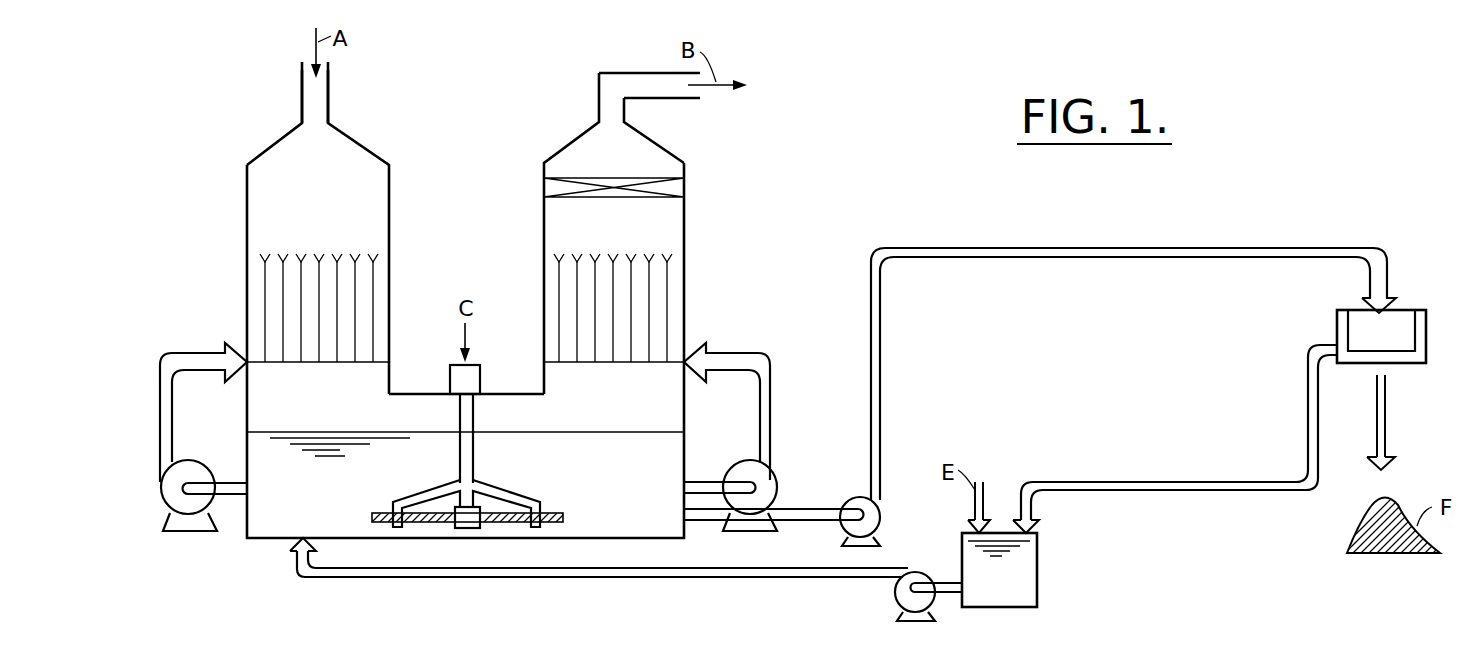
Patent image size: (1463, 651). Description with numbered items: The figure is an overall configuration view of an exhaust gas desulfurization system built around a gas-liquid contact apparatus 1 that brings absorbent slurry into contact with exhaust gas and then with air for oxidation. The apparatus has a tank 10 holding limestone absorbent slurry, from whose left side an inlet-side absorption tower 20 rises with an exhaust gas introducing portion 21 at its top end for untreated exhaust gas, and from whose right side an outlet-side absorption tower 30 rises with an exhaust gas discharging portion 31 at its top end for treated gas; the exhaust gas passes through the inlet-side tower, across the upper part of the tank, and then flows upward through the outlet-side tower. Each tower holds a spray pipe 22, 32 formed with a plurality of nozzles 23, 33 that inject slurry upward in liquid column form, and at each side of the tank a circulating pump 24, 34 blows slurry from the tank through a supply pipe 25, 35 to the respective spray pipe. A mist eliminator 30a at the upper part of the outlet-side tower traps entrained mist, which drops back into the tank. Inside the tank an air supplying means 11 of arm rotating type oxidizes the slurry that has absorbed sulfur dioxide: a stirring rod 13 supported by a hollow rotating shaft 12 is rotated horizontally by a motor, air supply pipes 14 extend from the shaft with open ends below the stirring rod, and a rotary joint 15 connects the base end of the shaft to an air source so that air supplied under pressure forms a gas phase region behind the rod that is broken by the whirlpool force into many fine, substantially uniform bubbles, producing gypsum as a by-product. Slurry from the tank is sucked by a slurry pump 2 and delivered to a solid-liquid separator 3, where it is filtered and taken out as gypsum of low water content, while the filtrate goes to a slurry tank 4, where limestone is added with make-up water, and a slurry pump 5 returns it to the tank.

The gas-liquid contact apparatus 1 is at (780, 112).
The slurry pump 2 is at (882, 521).
The solid-liquid separator 3 is at (1420, 310).
The slurry tank 4 is at (1038, 566).
The slurry pump 5 is at (895, 600).
The tank 10 is at (355, 540).
The air supplying means 11 is at (562, 485).
The hollow rotating shaft 12 is at (474, 452).
The stirring rod 13 is at (433, 530).
The air supply pipe 14 is at (413, 496).
The rotary joint 15 is at (482, 376).
The inlet-side absorption tower 20 is at (241, 232).
The exhaust gas introducing portion 21 is at (302, 90).
The spray pipe 22 is at (259, 361).
The nozzles 23 is at (283, 363).
The circulating pump 24 is at (165, 500).
The supply pipe 25 is at (192, 352).
The outlet-side absorption tower 30 is at (697, 247).
The mist eliminator 30a is at (632, 178).
The exhaust gas discharging portion 31 is at (604, 100).
The spray pipe 32 is at (676, 357).
The nozzles 33 is at (578, 363).
The circulating pump 34 is at (777, 492).
The supply pipe 35 is at (744, 351).